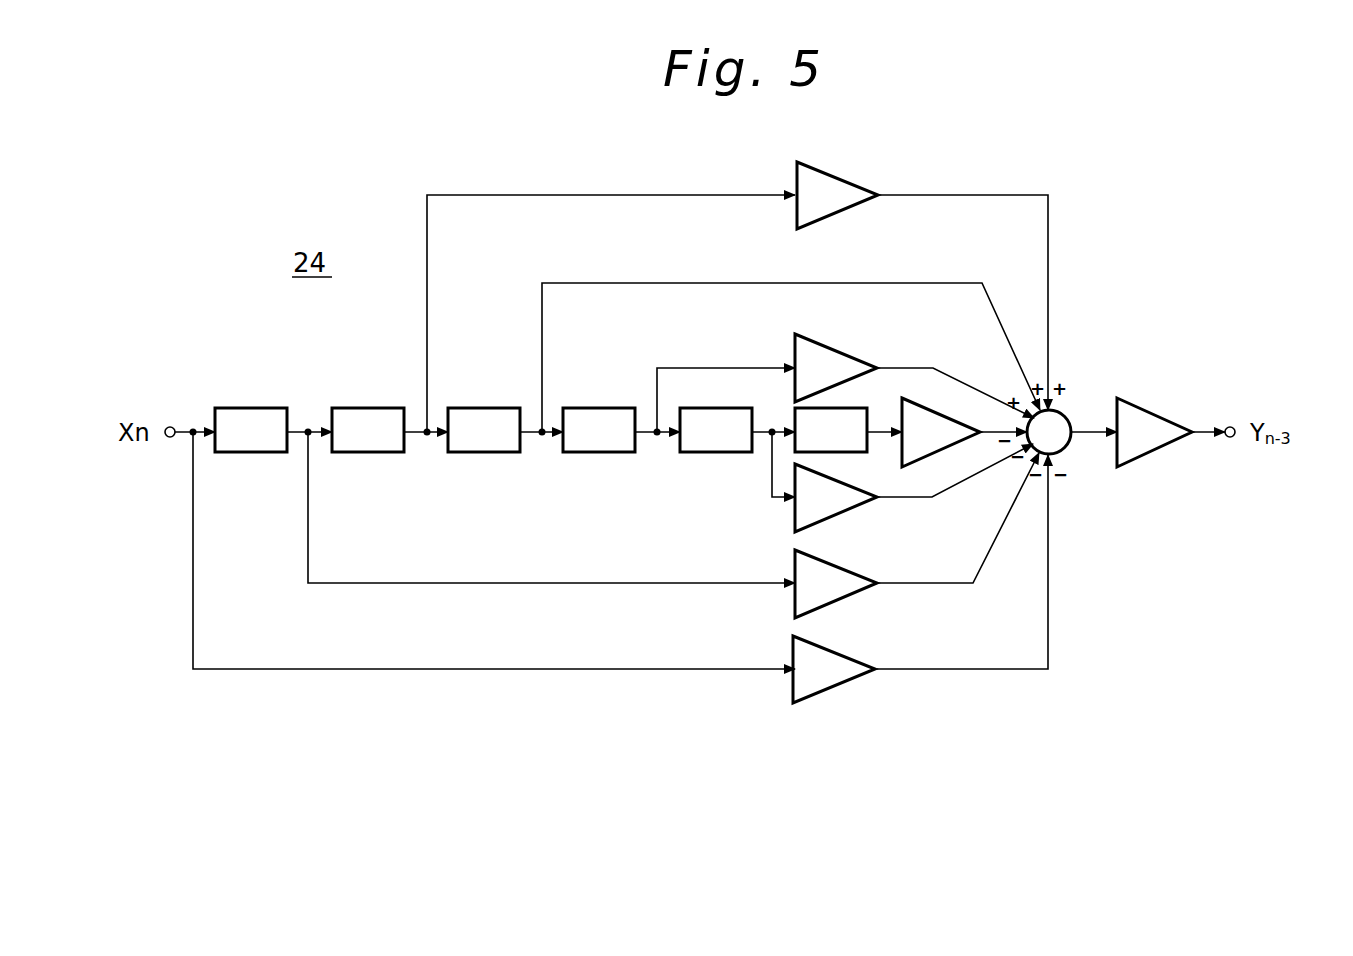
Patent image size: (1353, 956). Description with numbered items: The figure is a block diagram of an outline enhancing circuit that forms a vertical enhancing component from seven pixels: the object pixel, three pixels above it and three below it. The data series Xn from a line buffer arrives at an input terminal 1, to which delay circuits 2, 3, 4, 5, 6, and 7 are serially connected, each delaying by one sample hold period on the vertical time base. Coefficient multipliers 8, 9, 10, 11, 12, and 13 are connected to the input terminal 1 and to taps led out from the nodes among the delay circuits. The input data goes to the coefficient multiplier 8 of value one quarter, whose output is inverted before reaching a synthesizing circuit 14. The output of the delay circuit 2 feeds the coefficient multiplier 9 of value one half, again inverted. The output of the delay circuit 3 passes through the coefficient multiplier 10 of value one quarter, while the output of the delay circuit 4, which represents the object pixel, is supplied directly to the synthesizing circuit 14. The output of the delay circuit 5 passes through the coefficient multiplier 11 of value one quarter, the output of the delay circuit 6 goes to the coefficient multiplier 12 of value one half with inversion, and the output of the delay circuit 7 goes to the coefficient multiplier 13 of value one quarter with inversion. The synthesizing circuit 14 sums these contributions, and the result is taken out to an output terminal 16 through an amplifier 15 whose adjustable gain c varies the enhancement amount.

The input terminal 1 is at (168, 438).
The delay circuit 2 is at (252, 452).
The delay circuit 3 is at (367, 452).
The delay circuit 4 is at (483, 452).
The delay circuit 5 is at (600, 452).
The delay circuit 6 is at (712, 452).
The delay circuit 7 is at (855, 453).
The coefficient multiplier 8 is at (840, 686).
The coefficient multiplier 9 is at (845, 597).
The coefficient multiplier 10 is at (836, 212).
The coefficient multiplier 11 is at (845, 332).
The coefficient multiplier 12 is at (845, 511).
The coefficient multiplier 13 is at (938, 398).
The synthesizing circuit 14 is at (1068, 416).
The amplifier 15 is at (1152, 460).
The output terminal 16 is at (1230, 438).